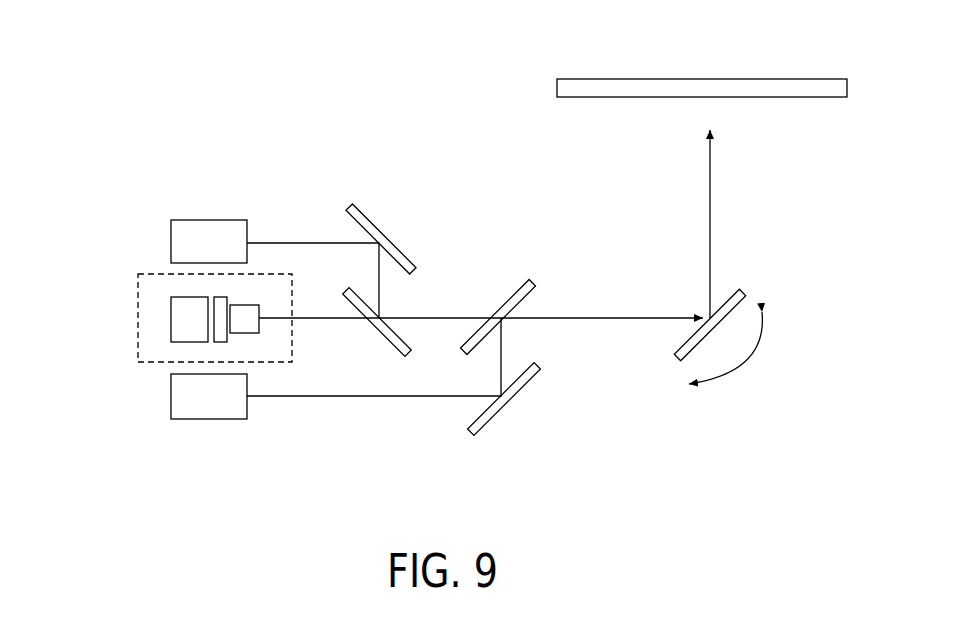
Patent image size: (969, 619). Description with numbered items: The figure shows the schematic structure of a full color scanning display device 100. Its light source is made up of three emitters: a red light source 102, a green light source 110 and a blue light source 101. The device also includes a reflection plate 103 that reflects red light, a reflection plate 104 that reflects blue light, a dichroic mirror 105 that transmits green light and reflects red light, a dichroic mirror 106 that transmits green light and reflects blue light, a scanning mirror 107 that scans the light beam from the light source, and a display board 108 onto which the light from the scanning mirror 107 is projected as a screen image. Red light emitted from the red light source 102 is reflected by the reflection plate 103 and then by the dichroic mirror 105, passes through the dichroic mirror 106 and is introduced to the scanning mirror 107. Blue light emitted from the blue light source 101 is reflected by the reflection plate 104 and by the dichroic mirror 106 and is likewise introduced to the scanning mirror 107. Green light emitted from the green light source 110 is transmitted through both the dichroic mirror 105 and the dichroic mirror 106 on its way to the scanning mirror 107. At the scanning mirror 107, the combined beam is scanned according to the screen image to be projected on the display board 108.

The scanning display device 100 is at (826, 210).
The blue light source 101 is at (210, 419).
The red light source 102 is at (218, 220).
The reflection plate 103 is at (375, 237).
The reflection plate 104 is at (500, 417).
The dichroic mirror 105 is at (382, 341).
The dichroic mirror 106 is at (528, 282).
The scanning mirror 107 is at (742, 292).
The display board 108 is at (802, 78).
The green light source 110 is at (138, 323).